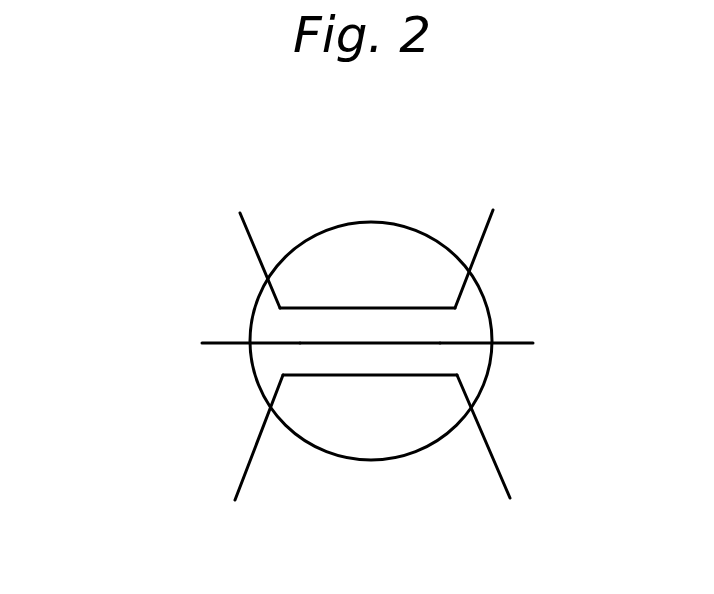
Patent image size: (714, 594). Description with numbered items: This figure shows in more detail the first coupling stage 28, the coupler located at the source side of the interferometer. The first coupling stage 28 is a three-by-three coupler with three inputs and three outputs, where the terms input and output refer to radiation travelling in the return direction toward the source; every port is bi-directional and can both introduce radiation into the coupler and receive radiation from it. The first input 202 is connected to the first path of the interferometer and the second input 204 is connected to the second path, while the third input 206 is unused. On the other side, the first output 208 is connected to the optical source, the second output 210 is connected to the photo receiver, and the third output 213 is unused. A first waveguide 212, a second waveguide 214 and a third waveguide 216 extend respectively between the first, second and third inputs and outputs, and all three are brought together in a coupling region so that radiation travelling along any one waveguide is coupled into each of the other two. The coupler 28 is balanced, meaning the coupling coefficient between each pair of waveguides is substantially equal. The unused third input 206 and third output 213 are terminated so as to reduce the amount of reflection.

The first coupling stage 28 is at (180, 318).
The first input 202 is at (482, 240).
The second input 204 is at (503, 485).
The third input 206 is at (512, 343).
The first output 208 is at (252, 243).
The second output 210 is at (245, 473).
The first waveguide 212 is at (390, 307).
The third output 213 is at (227, 345).
The second waveguide 214 is at (367, 375).
The third waveguide 216 is at (333, 342).